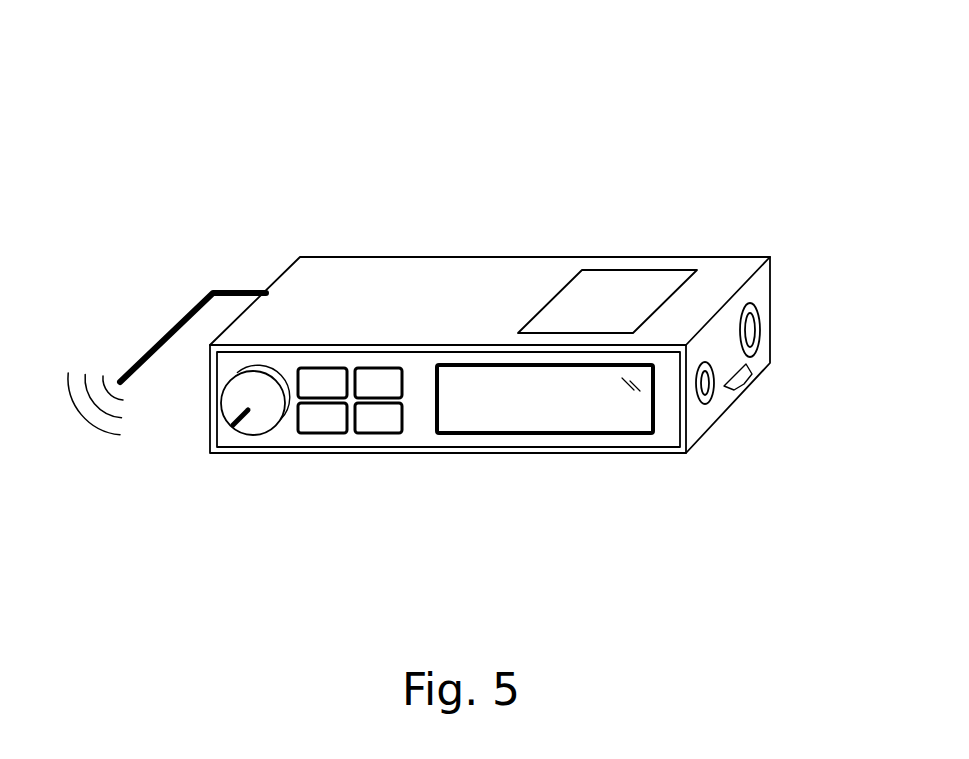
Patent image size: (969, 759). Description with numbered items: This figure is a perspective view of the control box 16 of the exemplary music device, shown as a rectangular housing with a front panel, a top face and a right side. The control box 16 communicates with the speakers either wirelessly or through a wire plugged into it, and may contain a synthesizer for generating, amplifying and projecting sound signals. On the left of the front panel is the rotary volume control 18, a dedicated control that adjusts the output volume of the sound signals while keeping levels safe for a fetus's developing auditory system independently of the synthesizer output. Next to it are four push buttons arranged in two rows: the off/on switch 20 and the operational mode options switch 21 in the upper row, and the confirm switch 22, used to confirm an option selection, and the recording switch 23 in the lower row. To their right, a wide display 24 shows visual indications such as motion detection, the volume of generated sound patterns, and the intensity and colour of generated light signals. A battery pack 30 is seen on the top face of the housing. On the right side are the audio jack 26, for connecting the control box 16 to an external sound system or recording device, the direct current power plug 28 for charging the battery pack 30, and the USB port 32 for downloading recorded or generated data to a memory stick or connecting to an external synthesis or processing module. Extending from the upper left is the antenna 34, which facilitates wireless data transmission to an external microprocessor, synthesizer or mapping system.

The control box 16 is at (449, 205).
The volume control 18 is at (225, 418).
The off/on switch 20 is at (307, 368).
The operational mode options switch 21 is at (377, 368).
The confirm switch 22 is at (313, 433).
The recording switch 23 is at (362, 433).
The display 24 is at (517, 433).
The audio jack 26 is at (762, 330).
The direct current power plug 28 is at (703, 404).
The battery pack 30 is at (607, 270).
The USB port 32 is at (735, 382).
The antenna 34 is at (153, 342).